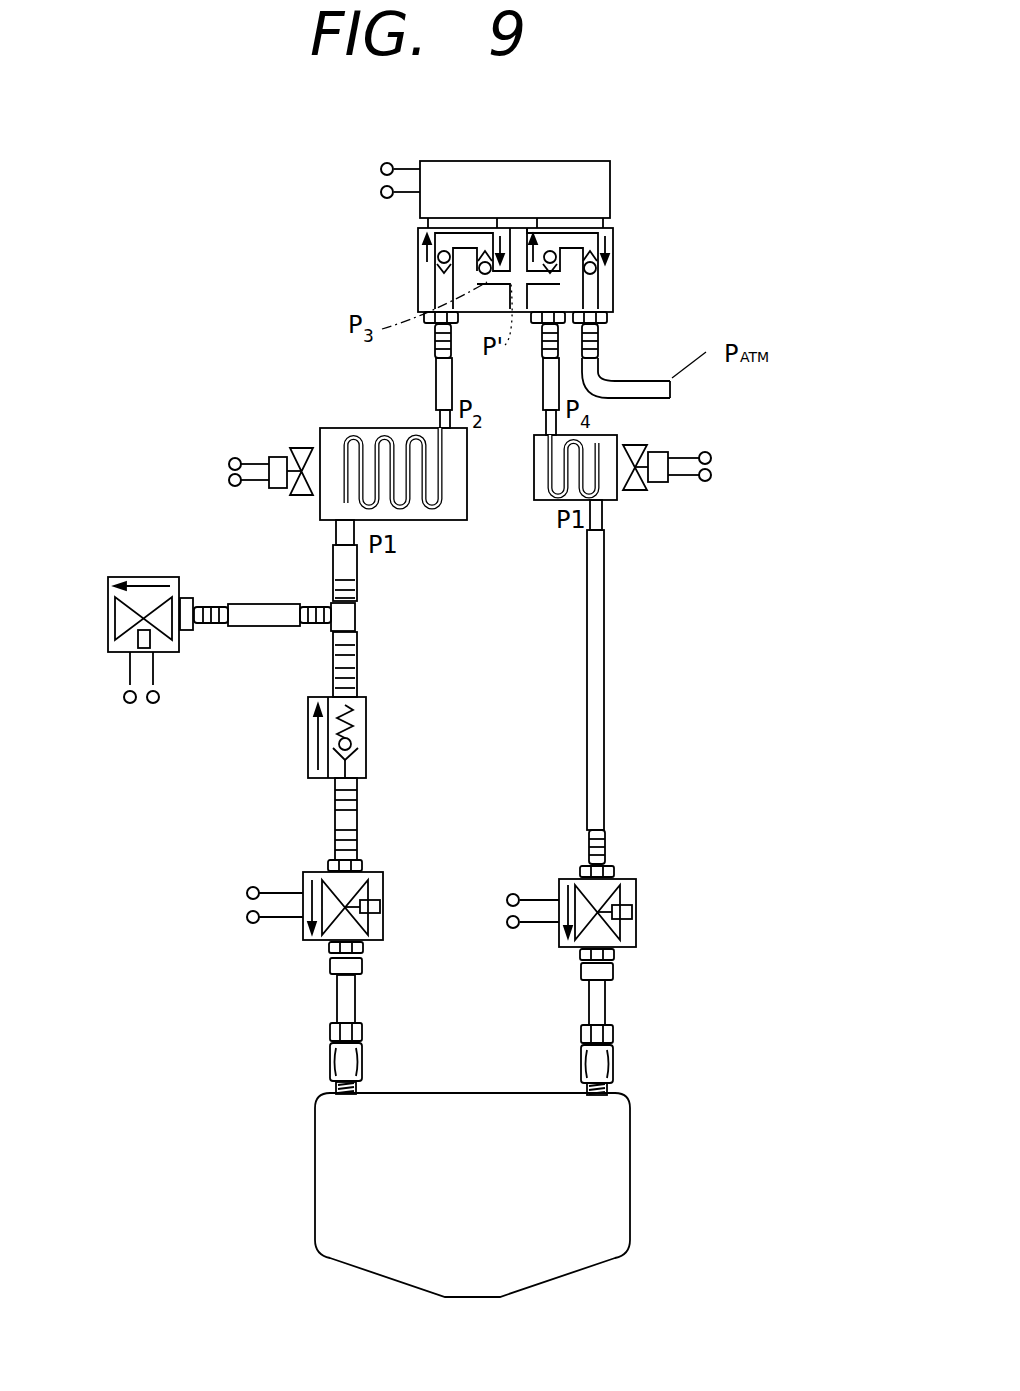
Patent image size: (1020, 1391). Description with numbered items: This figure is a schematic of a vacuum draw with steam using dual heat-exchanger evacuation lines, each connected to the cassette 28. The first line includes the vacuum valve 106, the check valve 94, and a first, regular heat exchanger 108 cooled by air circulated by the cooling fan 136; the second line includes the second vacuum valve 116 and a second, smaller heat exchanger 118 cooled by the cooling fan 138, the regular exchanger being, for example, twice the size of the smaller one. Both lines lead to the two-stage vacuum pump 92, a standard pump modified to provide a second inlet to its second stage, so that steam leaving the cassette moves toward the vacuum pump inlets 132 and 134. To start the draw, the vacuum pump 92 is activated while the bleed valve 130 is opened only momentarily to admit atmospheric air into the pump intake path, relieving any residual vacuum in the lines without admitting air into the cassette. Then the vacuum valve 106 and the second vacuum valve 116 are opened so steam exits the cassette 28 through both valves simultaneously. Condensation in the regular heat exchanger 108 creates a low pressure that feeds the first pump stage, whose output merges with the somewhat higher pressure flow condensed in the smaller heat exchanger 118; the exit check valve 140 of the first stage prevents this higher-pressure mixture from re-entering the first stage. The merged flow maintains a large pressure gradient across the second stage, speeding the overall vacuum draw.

The vacuum pump 92 is at (456, 203).
The vacuum pump inlet 132 is at (418, 264).
The exit check valve 140 is at (478, 262).
The vacuum pump inlet 134 is at (548, 262).
The regular heat exchanger 108 is at (322, 440).
The cooling fan 136 is at (269, 462).
The second heat exchanger 118 is at (617, 500).
The cooling fan 138 is at (668, 483).
The bleed valve 130 is at (150, 577).
The check valve 94 is at (308, 725).
The vacuum valve 106 is at (302, 882).
The second vacuum valve 116 is at (622, 878).
The cassette 28 is at (438, 1257).